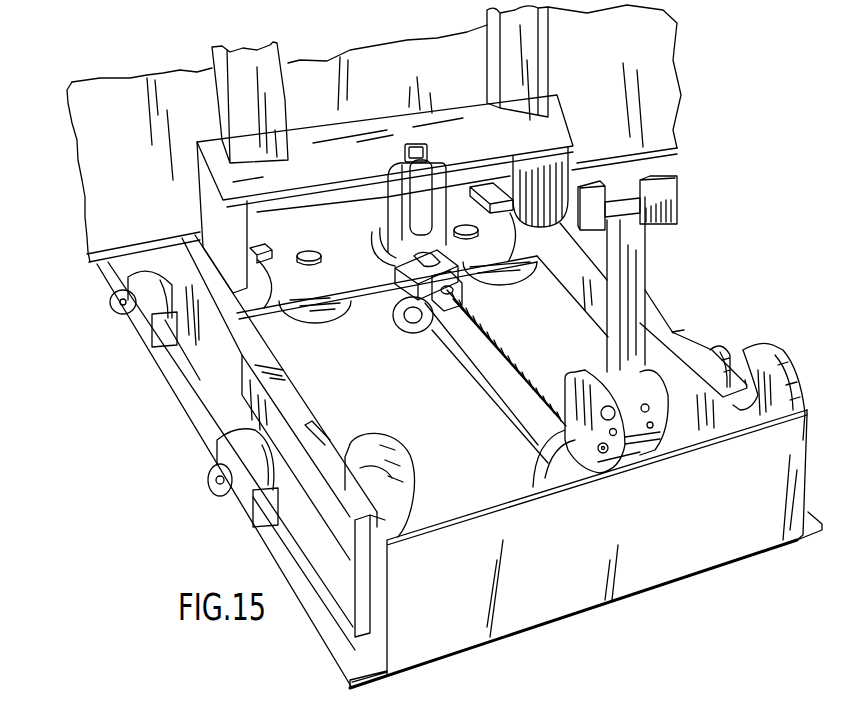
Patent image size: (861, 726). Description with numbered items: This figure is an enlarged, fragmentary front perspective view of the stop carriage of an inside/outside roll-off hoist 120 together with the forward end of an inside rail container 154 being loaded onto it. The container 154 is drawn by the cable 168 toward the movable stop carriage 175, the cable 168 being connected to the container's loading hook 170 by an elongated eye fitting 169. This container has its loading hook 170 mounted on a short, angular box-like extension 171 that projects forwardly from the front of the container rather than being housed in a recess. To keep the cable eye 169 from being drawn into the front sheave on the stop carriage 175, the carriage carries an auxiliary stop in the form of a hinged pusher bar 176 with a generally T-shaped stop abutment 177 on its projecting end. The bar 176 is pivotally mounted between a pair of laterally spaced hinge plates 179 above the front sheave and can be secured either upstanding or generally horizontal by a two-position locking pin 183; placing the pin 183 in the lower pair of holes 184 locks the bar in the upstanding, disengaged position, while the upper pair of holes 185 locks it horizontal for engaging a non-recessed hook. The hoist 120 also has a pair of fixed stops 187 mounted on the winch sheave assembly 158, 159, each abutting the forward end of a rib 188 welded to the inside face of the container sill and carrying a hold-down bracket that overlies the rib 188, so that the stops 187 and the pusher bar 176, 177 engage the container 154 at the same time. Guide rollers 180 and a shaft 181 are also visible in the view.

The inside/outside roll-off hoist 120 is at (127, 268).
The inside rail container 154 is at (680, 75).
The winch sheave assembly 158 is at (510, 268).
The winch sheave assembly 159 is at (307, 285).
The cable 168 is at (500, 348).
The elongated eye fitting 169 is at (466, 290).
The loading hook 170 is at (387, 260).
The angular box-like extension 171 is at (214, 228).
The movable stop carriage 175 is at (664, 598).
The hinged bar 176 is at (644, 258).
The T-shaped stop abutment 177 is at (635, 197).
The hinge plates 179 is at (652, 410).
The guide roller 180 is at (389, 453).
The shaft 181 is at (393, 307).
The two-position locking pin 183 is at (622, 440).
The lower pair of holes 184 is at (603, 455).
The upper pair of holes 185 is at (655, 425).
The fixed stops 187 is at (255, 252).
The rib 188 is at (468, 192).